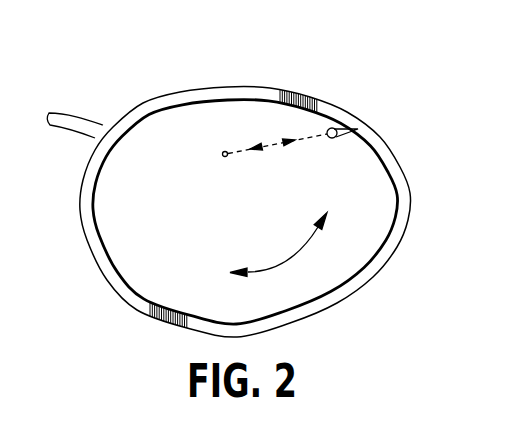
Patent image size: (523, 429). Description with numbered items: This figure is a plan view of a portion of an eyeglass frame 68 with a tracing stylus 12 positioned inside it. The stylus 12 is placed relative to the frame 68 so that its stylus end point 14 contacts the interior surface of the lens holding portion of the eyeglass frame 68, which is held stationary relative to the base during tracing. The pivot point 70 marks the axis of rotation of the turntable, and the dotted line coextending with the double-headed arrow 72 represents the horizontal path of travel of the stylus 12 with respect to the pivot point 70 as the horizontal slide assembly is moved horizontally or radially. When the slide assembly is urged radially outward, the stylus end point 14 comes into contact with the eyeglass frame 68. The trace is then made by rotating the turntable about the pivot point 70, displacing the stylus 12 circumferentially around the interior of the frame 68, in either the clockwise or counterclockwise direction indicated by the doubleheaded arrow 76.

The eyeglass frame 68 is at (107, 281).
The pivot point 70 is at (222, 155).
The double-headed arrow 72 is at (273, 143).
The stylus 12 is at (329, 129).
The stylus end point 14 is at (358, 129).
The doubleheaded arrow 76 is at (302, 255).